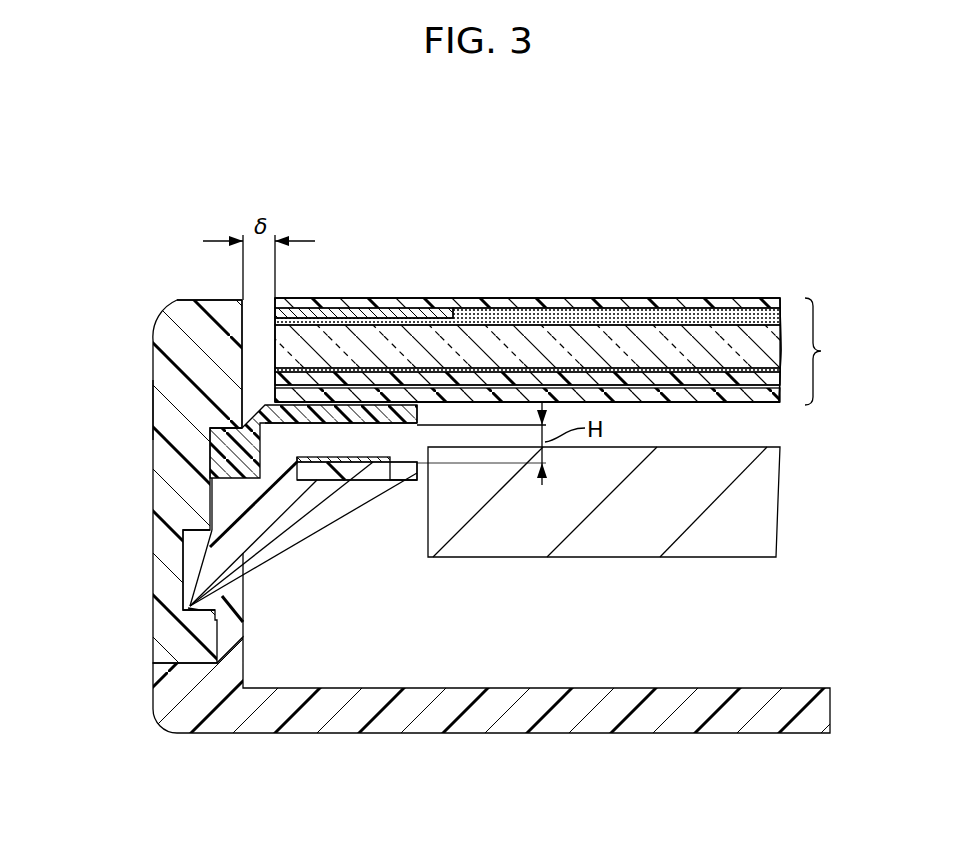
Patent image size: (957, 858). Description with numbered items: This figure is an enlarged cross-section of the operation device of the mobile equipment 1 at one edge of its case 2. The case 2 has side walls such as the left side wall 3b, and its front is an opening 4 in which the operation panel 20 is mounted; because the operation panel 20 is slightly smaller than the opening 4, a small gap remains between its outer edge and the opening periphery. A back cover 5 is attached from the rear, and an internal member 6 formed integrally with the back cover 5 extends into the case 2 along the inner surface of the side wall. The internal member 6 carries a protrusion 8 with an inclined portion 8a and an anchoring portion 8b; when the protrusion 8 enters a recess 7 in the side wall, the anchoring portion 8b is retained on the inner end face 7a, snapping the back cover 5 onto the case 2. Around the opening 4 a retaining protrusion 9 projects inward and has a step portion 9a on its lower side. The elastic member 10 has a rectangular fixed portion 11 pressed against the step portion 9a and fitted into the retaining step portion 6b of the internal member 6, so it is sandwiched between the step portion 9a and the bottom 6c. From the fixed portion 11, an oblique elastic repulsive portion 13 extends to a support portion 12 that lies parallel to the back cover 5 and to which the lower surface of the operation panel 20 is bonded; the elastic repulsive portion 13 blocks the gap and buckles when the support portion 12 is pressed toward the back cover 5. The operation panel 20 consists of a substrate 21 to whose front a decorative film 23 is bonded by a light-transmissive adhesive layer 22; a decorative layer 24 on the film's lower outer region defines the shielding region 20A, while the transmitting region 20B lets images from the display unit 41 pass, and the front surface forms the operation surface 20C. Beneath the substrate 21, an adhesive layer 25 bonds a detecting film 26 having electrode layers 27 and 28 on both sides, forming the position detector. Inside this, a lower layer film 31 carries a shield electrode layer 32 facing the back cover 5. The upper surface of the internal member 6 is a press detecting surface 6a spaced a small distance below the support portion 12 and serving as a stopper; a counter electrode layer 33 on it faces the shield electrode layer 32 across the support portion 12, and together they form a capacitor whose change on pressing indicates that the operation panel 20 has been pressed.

The mobile equipment 1 is at (192, 258).
The case 2 is at (146, 357).
The left side wall 3b is at (156, 400).
The opening 4 is at (262, 322).
The back cover 5 is at (385, 712).
The internal member 6 is at (255, 530).
The press detecting surface 6a is at (420, 482).
The retaining step portion 6b is at (300, 482).
The bottom of the retaining step portion 6c is at (285, 535).
The recess 7 is at (186, 541).
The inner end face 7a is at (189, 606).
The protrusion 8 is at (238, 602).
The inclined portion 8a is at (192, 548).
The anchoring portion 8b is at (200, 612).
The retaining protrusion 9 is at (244, 375).
The step portion 9a is at (242, 438).
The elastic member 10 is at (395, 440).
The fixed portion 11 is at (255, 470).
The support portion 12 is at (410, 422).
The elastic repulsive portion 13 is at (333, 464).
The operation panel 20 is at (560, 351).
The shielding region 20A is at (398, 275).
The transmitting region 20B is at (655, 275).
The operation surface 20C is at (612, 252).
The substrate 21 is at (695, 310).
The light-transmissive adhesive layer 22 is at (562, 308).
The decorative film 23 is at (527, 303).
The decorative layer 24 is at (443, 306).
The adhesive layer 25 is at (783, 372).
The detecting film 26 is at (777, 403).
The electrode layer 27 is at (740, 366).
The electrode layer 28 is at (748, 402).
The lower layer film 31 is at (620, 386).
The shield electrode layer 32 is at (718, 402).
The counter electrode layer 33 is at (362, 482).
The display unit 41 is at (733, 545).